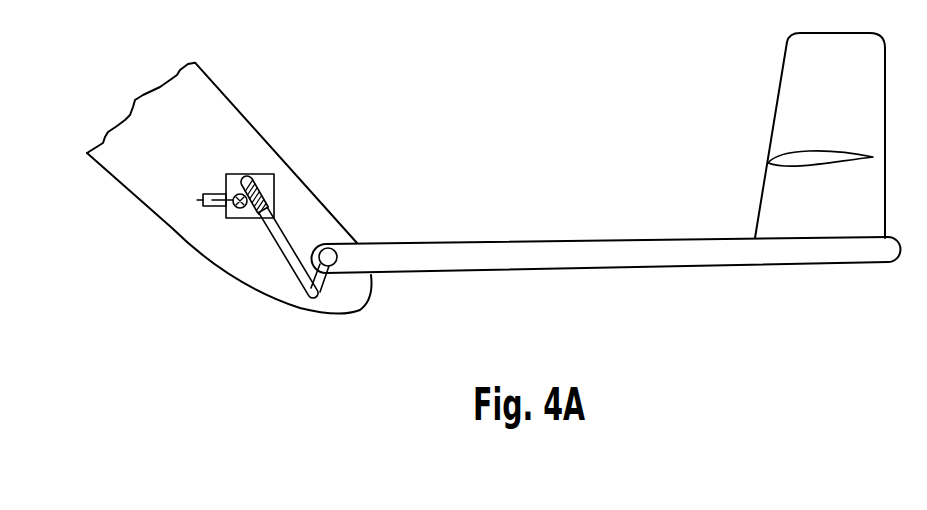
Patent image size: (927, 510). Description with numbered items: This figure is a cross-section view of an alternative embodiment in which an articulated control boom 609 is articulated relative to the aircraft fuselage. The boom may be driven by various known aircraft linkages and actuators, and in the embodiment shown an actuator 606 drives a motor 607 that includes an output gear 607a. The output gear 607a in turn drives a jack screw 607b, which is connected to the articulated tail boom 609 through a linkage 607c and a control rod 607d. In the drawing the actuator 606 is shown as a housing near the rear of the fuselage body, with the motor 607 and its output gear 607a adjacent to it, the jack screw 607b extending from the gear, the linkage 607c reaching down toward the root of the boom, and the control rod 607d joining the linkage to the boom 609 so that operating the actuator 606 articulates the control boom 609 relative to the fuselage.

The actuator 606 is at (272, 172).
The motor 607 is at (203, 201).
The output gear 607a is at (240, 208).
The jack screw 607b is at (250, 174).
The linkage 607c is at (280, 233).
The control rod 607d is at (333, 272).
The articulated control boom 609 is at (663, 268).